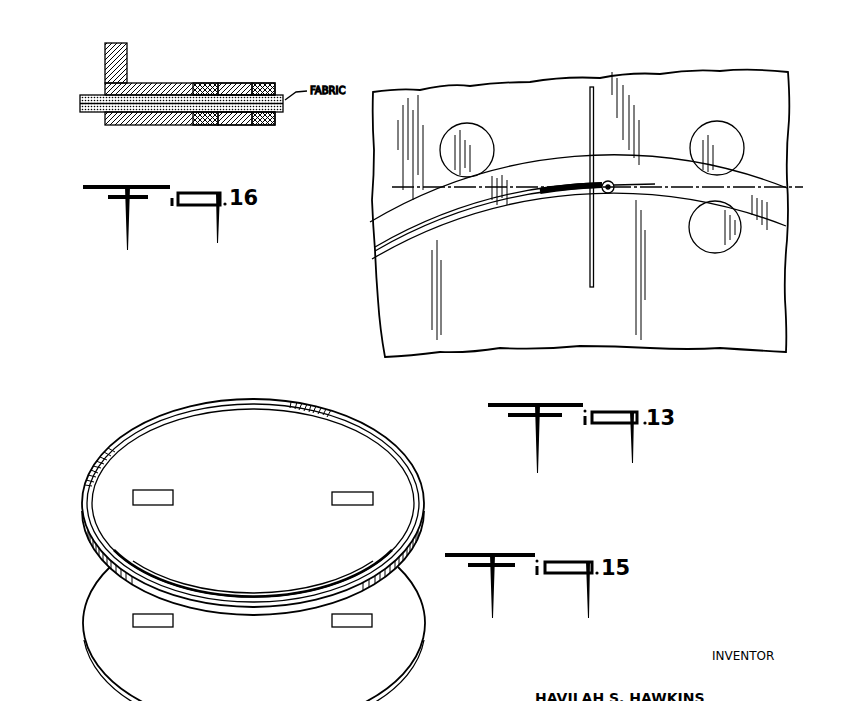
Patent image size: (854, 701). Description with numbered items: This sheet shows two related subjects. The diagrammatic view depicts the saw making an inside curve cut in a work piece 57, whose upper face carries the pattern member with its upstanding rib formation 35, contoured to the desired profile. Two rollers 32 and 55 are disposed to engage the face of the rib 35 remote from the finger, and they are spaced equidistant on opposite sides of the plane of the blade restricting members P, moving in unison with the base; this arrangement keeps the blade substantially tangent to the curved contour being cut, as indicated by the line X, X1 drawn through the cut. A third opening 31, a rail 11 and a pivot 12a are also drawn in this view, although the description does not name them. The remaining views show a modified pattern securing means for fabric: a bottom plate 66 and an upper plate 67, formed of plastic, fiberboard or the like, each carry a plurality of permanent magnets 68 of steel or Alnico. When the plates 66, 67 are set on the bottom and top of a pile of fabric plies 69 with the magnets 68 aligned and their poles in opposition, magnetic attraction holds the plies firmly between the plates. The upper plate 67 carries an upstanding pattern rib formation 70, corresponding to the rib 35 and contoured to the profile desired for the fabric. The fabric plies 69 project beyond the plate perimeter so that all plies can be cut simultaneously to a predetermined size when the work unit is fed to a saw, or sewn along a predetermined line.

In FIG. 16, the pattern rib formation 70 is at (127, 50).
In FIG. 15, the pattern rib formation 70 is at (278, 399).
In FIG. 16, the upper plate 67 is at (135, 84).
In FIG. 15, the upper plate 67 is at (266, 462).
In FIG. 16, the permanent magnets 68 is at (214, 83).
In FIG. 15, the permanent magnets 68 is at (159, 490).
In FIG. 16, the fabric plies 69 is at (78, 103).
In FIG. 16, the bottom plate 66 is at (116, 125).
In FIG. 15, the bottom plate 66 is at (279, 682).
In FIG. 13, the work piece 57 is at (562, 118).
In FIG. 13, the roller 55 is at (477, 134).
In FIG. 13, the roller 32 is at (706, 135).
In FIG. 13, the opening 31 is at (703, 237).
In FIG. 13, the guide rail 11 is at (565, 193).
In FIG. 13, the pivot 12a is at (614, 192).
In FIG. 13, the upstanding rib formation 35 is at (658, 178).
In FIG. 13, the blade restricting members P is at (590, 142).
In FIG. 13, the tangent line X is at (597, 179).
In FIG. 13, the tangent line X1 is at (775, 179).